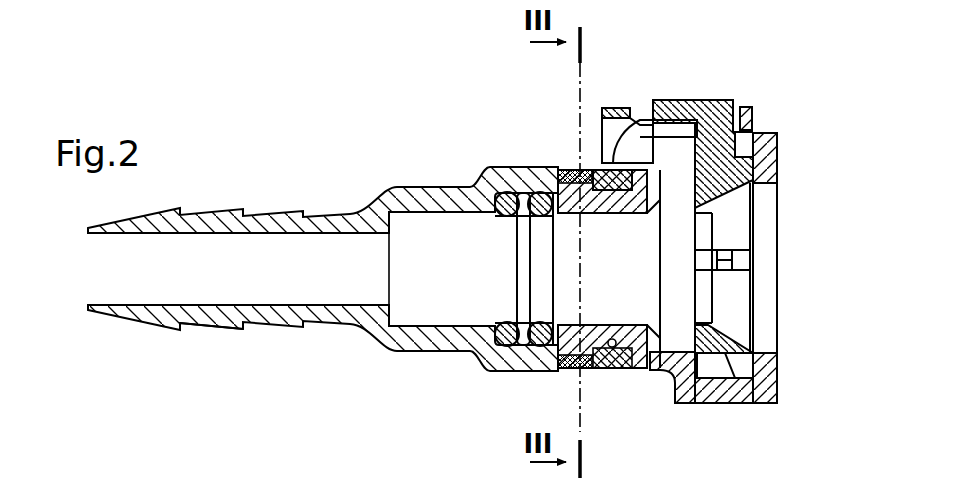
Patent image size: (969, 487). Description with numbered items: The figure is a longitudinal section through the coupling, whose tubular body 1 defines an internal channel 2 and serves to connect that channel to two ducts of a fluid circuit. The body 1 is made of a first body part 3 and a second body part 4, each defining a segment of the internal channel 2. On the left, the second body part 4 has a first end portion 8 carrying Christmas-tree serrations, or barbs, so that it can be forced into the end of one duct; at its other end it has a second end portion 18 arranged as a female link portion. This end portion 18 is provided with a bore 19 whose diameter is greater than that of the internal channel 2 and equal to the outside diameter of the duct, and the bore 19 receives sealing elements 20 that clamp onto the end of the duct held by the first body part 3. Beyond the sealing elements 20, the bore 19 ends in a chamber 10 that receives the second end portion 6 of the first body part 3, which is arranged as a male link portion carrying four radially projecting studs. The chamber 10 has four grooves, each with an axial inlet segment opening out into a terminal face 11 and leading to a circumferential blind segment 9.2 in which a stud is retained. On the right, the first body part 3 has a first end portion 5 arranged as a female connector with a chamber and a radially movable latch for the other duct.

The body 1 is at (356, 124).
The internal channel 2 is at (320, 240).
The first body part 3 is at (777, 102).
The second body part 4 is at (213, 180).
The first end portion 5 is at (752, 404).
The second end portion 6 is at (615, 323).
The first end portion 8 is at (160, 312).
The blind segment 9.2 is at (574, 170).
The chamber 10 is at (615, 368).
The terminal face 11 is at (631, 108).
The second end portion 18 is at (490, 353).
The bore 19 is at (413, 212).
The sealing elements 20 is at (540, 322).